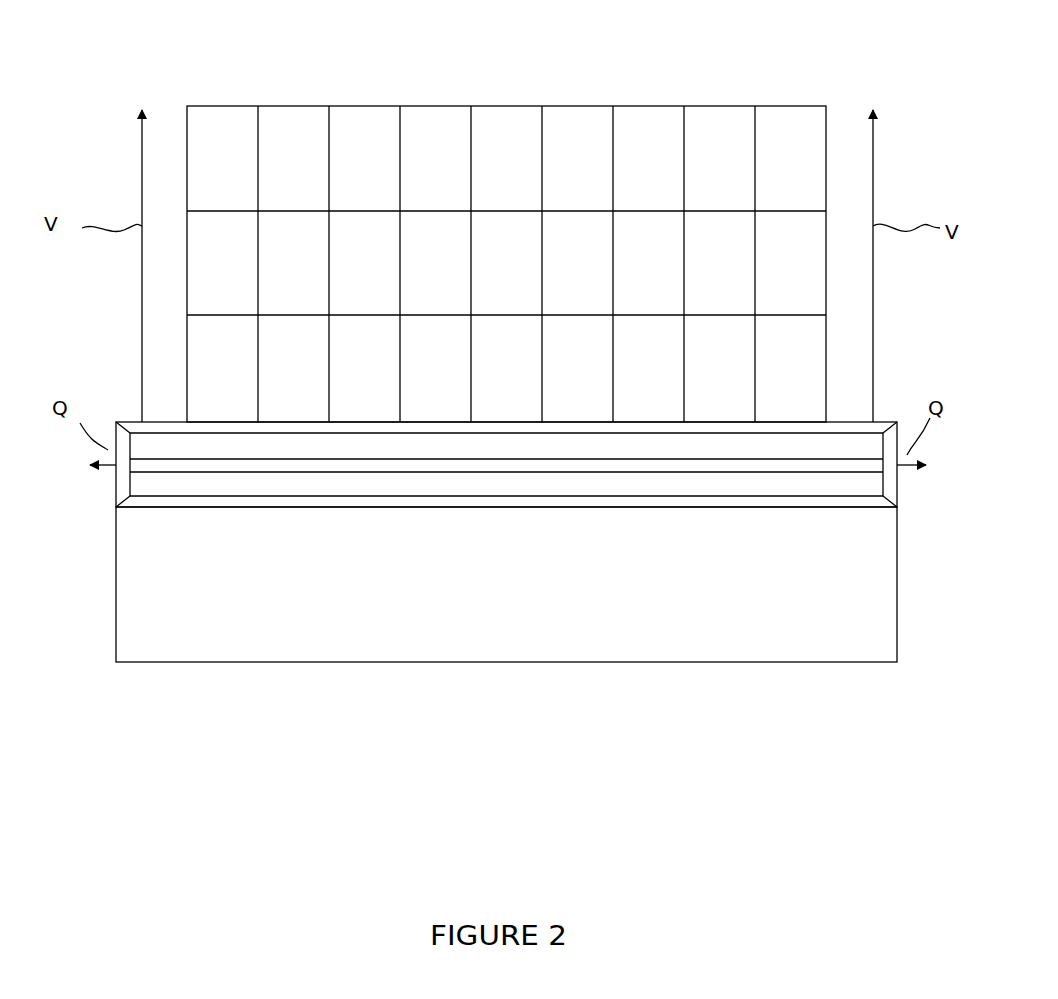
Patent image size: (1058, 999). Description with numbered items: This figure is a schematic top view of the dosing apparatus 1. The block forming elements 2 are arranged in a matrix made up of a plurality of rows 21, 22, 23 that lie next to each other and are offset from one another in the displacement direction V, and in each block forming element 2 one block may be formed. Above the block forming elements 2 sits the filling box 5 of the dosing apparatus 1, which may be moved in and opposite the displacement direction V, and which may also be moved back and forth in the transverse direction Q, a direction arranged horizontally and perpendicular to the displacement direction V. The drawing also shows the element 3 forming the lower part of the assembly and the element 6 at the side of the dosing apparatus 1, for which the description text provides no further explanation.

The dosing apparatus 1 is at (885, 422).
The block forming elements 2 is at (451, 217).
The row 21 is at (202, 162).
The row 22 is at (202, 266).
The row 23 is at (202, 364).
The base 3 is at (141, 644).
The filling box 5 is at (885, 490).
The frame groove 6 is at (146, 467).